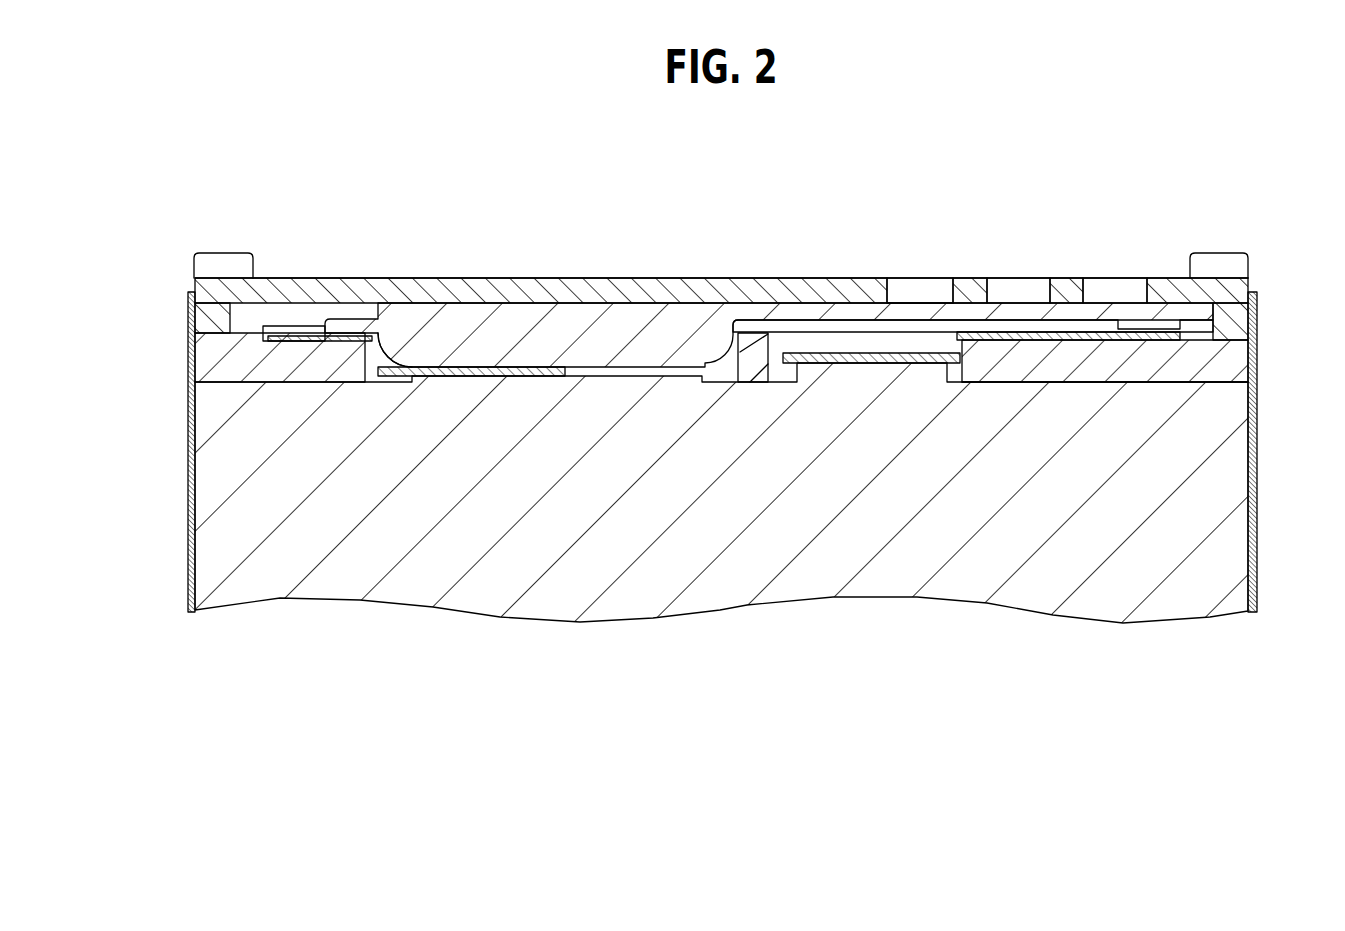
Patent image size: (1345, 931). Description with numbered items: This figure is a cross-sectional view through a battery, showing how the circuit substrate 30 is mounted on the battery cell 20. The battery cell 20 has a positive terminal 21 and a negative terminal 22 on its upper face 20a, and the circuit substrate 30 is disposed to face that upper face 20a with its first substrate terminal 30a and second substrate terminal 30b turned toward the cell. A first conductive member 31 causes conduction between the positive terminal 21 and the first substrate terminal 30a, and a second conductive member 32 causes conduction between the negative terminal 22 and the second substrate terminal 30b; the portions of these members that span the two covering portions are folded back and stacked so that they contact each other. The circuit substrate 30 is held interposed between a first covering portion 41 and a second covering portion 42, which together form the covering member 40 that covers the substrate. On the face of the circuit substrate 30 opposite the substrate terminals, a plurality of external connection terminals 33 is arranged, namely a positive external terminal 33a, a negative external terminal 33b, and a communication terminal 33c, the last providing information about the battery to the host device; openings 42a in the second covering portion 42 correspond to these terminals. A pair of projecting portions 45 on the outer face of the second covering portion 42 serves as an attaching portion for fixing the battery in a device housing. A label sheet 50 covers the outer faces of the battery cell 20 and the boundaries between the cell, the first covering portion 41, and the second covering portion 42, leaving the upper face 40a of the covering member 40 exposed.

The battery cell 20 is at (1228, 535).
The upper face 20a is at (1222, 372).
The positive terminal 21 is at (615, 375).
The negative terminal 22 is at (843, 357).
The circuit substrate 30 is at (505, 325).
The first substrate terminal 30a is at (300, 325).
The second substrate terminal 30b is at (1155, 337).
The first conductive member 31 is at (428, 367).
The second conductive member 32 is at (1097, 332).
The external connection terminals 33 is at (1093, 212).
The positive external terminal 33a is at (922, 290).
The negative external terminal 33b is at (1098, 300).
The communication terminal 33c is at (1018, 298).
The covering member 40 is at (118, 250).
The upper face of the covering member 40a is at (658, 266).
The first covering portion 41 is at (205, 362).
The second covering portion 42 is at (196, 285).
The openings 42a is at (903, 290).
The projecting portions 45 is at (217, 252).
The label sheet 50 is at (1256, 435).